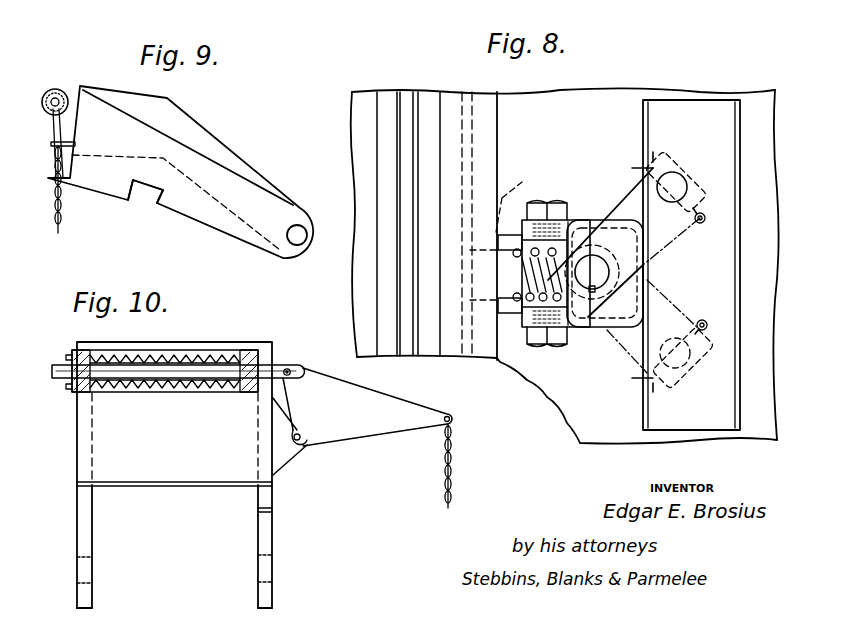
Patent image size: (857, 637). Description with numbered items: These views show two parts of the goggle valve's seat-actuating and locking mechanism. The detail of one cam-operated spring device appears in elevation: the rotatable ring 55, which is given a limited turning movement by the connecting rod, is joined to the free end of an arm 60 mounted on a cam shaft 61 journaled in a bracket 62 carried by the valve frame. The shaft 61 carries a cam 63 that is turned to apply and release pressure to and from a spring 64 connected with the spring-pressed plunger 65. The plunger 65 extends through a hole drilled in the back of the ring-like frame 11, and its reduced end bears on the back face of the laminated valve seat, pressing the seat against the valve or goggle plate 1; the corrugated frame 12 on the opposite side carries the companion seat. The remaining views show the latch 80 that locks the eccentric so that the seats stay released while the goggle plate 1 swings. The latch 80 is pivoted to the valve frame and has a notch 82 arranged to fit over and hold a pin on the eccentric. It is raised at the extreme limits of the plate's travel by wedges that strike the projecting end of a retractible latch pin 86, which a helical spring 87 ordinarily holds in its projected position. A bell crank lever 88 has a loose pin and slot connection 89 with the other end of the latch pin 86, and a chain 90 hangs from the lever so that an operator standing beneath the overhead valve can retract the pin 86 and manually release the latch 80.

In FIG. 8, the valve or goggle plate 1 is at (358, 288).
In FIG. 8, the ring-like frame 11 is at (490, 120).
In FIG. 8, the ring-like frame 12 is at (365, 115).
In FIG. 8, the rotatable ring 55 is at (723, 280).
In FIG. 8, the arm 60 is at (617, 215).
In FIG. 8, the cam shaft 61 is at (583, 263).
In FIG. 8, the bracket 62 is at (600, 318).
In FIG. 8, the cam 63 is at (643, 267).
In FIG. 8, the spring 64 is at (517, 304).
In FIG. 8, the spring-pressed plunger 65 is at (503, 198).
In FIG. 9, the latch 80 is at (227, 160).
In FIG. 10, the latch 80 is at (77, 453).
In FIG. 9, the notch 82 is at (132, 201).
In FIG. 10, the notch 82 is at (273, 510).
In FIG. 9, the retractible latch pin 86 is at (43, 102).
In FIG. 10, the retractible latch pin 86 is at (65, 375).
In FIG. 10, the helical spring 87 is at (170, 392).
In FIG. 9, the bell crank lever 88 is at (55, 128).
In FIG. 10, the bell crank lever 88 is at (373, 428).
In FIG. 10, the loose pin and slot connection 89 is at (290, 367).
In FIG. 9, the chain 90 is at (57, 210).
In FIG. 10, the chain 90 is at (447, 490).